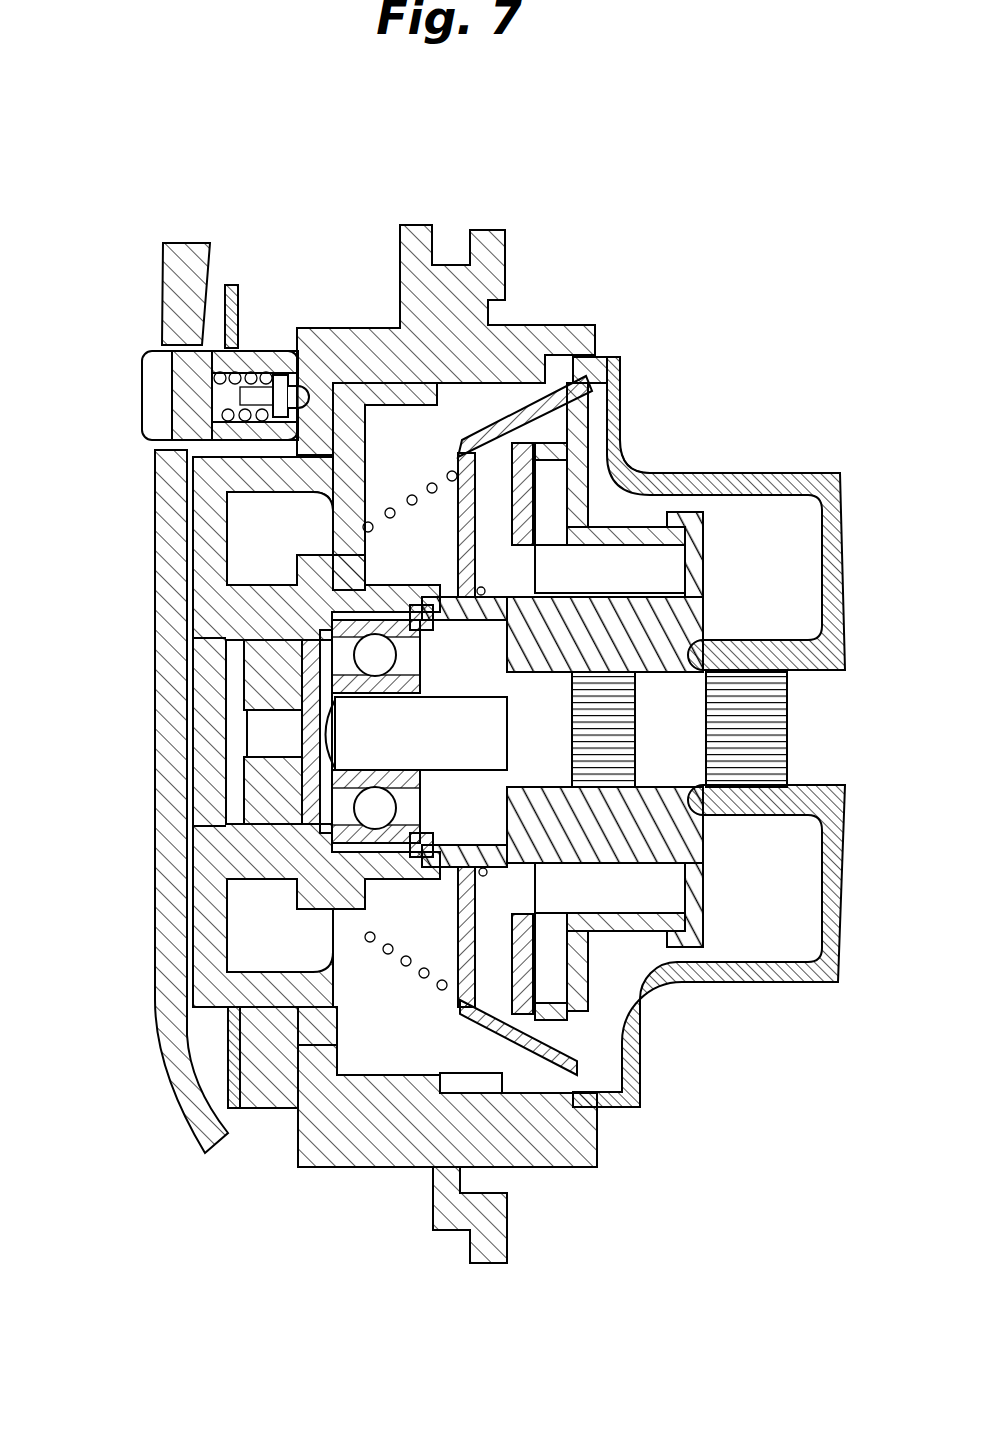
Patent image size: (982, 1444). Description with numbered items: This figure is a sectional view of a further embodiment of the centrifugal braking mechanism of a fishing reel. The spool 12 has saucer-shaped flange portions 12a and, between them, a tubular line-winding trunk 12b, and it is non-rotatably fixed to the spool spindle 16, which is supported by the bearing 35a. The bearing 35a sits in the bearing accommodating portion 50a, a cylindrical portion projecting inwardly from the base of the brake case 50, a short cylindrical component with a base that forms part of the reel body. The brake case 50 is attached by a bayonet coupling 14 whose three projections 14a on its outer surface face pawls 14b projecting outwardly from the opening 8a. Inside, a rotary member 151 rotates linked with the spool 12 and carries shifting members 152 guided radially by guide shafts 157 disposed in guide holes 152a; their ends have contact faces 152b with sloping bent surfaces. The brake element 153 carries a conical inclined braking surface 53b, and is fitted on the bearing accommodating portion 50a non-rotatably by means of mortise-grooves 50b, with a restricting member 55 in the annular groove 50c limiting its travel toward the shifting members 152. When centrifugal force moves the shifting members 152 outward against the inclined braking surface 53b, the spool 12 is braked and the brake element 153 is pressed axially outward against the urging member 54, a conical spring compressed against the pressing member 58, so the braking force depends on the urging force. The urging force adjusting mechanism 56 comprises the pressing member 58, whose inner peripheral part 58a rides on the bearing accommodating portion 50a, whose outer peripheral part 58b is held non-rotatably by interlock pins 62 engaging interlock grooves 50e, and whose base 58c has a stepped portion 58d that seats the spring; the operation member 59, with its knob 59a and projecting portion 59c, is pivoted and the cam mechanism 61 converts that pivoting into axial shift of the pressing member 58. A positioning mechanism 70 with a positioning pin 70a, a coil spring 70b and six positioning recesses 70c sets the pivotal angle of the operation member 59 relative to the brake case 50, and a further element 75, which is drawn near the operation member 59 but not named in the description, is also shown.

The opening 8a is at (490, 333).
The spool 12 is at (730, 472).
The flange portions 12a is at (652, 466).
The line-winding trunk 12b is at (792, 472).
The bayonet coupling 14 is at (508, 270).
The projections 14a is at (513, 273).
The pawls 14b is at (448, 225).
The spool spindle 16 is at (673, 770).
The bearing 35a is at (420, 683).
The brake case 50 is at (218, 540).
The bearing accommodating portion 50a is at (330, 600).
The mortise-grooves 50b is at (445, 585).
The annular groove 50c is at (500, 600).
The interlock grooves 50e is at (470, 400).
The inclined braking surface 53b is at (603, 372).
The urging member 54 is at (395, 505).
The restricting member 55 is at (487, 590).
The urging force adjusting mechanism 56 is at (277, 1120).
The pressing member 58 is at (367, 1077).
The inner peripheral part 58a is at (280, 583).
The outer peripheral part 58b is at (360, 402).
The base 58c is at (335, 513).
The stepped portion 58d is at (368, 940).
The operation member 59 is at (252, 1137).
The knob 59a is at (195, 375).
The projecting portion 59c is at (160, 395).
The cam mechanism 61 is at (330, 1078).
The interlock pins 62 is at (560, 340).
The positioning mechanism 70 is at (248, 348).
The positioning pin 70a is at (262, 383).
The coil spring 70b is at (231, 285).
The positioning recesses 70c is at (338, 362).
The bolt 75 is at (231, 1062).
The rotary member 151 is at (692, 628).
The shifting members 152 is at (625, 398).
The guide holes 152a is at (560, 543).
The contact faces 152b is at (620, 380).
The brake element 153 is at (598, 416).
The guide shafts 157 is at (548, 585).